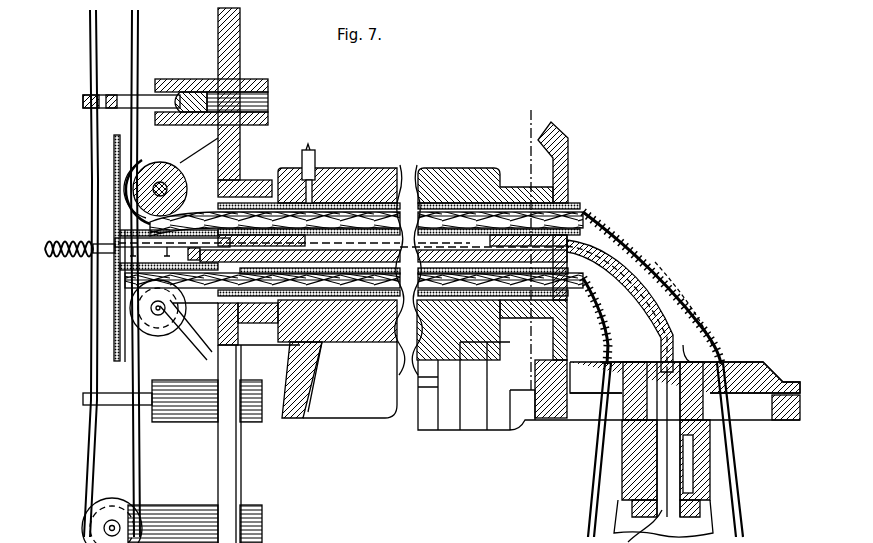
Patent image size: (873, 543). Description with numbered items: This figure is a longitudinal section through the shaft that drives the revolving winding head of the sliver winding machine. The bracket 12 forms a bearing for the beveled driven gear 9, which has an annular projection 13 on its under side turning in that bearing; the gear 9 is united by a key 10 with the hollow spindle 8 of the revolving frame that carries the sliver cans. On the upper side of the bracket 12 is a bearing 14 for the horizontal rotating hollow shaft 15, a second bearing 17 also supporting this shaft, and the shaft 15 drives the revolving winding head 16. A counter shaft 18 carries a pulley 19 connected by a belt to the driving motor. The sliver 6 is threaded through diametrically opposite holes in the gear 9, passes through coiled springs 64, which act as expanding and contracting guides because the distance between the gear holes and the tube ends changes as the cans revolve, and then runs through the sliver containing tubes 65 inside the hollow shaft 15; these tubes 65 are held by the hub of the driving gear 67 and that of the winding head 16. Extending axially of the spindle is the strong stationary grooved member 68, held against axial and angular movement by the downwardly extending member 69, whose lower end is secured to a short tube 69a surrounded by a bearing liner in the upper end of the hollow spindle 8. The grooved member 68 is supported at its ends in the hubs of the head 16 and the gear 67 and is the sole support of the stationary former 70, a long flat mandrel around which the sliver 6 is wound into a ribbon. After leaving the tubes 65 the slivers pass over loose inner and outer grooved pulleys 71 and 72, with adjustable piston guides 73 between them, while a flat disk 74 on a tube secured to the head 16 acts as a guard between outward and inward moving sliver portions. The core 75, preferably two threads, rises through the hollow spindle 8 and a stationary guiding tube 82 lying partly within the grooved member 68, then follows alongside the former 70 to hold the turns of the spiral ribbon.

The sliver 6 is at (92, 33).
The hollow spindle 8 is at (702, 506).
The beveled driven gear 9 is at (777, 368).
The key 10 is at (688, 454).
The bracket 12 is at (551, 410).
The annular projection 13 is at (763, 418).
The bearing 14 is at (452, 172).
The hollow shaft 15 is at (413, 192).
The revolving winding head 16 is at (233, 53).
The second bearing 17 is at (265, 182).
The counter shaft 18 is at (372, 167).
The pulley 19 is at (531, 395).
The coiled springs 64 is at (650, 272).
The sliver containing tubes 65 is at (578, 212).
The driving gear 67 is at (569, 160).
The stationary grooved member 68 is at (616, 248).
The downwardly extending member 69 is at (650, 330).
The short tube 69a is at (700, 337).
The former 70 is at (97, 270).
The inner grooved pulley 71 is at (163, 175).
The outer grooved pulley 72 is at (83, 530).
The adjustable guides 73 is at (196, 90).
The flat disk 74 is at (114, 334).
The core 75 is at (108, 240).
The stationary guiding tube 82 is at (681, 312).